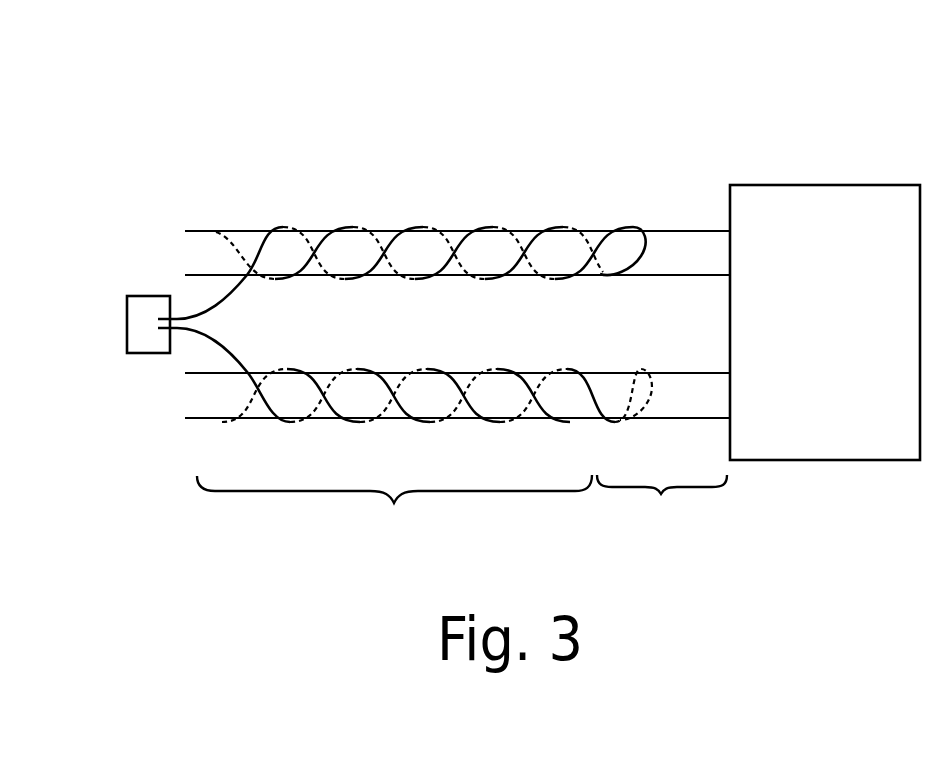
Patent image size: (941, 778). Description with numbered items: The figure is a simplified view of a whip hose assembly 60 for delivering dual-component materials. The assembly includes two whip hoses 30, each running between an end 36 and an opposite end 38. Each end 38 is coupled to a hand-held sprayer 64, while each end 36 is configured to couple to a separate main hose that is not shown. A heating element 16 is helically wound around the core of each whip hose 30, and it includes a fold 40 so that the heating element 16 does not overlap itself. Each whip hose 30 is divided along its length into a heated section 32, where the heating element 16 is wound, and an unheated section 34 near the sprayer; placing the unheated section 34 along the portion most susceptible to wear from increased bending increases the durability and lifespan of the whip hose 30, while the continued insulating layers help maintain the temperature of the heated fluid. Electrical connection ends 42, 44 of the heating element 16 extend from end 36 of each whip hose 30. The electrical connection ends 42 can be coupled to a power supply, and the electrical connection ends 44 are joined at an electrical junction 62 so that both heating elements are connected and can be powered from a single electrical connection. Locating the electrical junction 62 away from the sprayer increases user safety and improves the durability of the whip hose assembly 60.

The heating element 16 is at (283, 228).
The whip hose 30 is at (443, 269).
The heated section 32 is at (394, 505).
The unheated section 34 is at (662, 501).
The whip hose end 36 is at (401, 324).
The whip hose end 38 is at (694, 325).
The fold 40 is at (622, 242).
The heating element electrical connection end 42 is at (190, 231).
The heating element electrical connection end 44 is at (205, 333).
The whip hose assembly 60 is at (844, 88).
The electrical junction 62 is at (137, 321).
The hand-held sprayer 64 is at (815, 330).